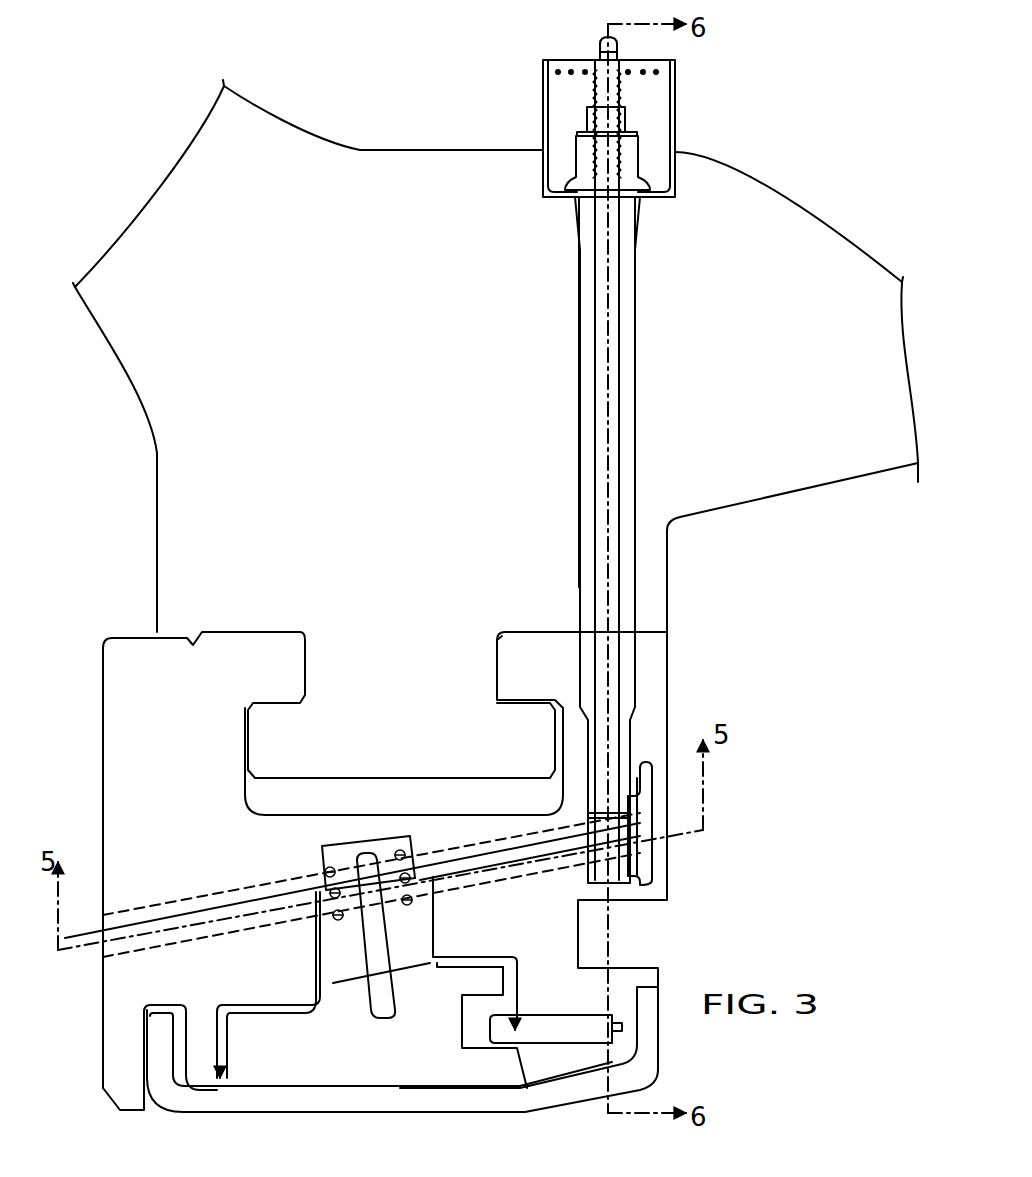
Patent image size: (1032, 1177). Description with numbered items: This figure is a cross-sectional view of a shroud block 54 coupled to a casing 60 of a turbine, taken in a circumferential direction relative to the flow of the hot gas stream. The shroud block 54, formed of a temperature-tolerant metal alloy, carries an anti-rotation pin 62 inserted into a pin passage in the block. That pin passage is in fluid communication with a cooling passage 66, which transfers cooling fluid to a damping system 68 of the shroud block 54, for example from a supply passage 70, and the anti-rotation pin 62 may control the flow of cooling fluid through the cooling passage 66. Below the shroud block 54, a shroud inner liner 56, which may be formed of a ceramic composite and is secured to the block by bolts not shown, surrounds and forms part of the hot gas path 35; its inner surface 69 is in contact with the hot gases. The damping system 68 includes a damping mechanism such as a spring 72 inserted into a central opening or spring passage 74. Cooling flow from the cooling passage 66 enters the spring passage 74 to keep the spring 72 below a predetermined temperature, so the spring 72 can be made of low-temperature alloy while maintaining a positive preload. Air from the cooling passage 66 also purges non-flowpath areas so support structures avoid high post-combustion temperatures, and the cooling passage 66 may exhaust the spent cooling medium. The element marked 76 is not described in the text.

The hot gas path 35 is at (408, 1134).
The shroud block 54 is at (103, 685).
The shroud inner liner 56 is at (480, 1113).
The casing 60 is at (157, 507).
The anti-rotation pin 62 is at (632, 604).
The cooling passage 66 is at (494, 888).
The damping system 68 is at (348, 837).
The inner surface 69 is at (246, 1119).
The supply passage 70 is at (650, 862).
The spring 72 is at (322, 850).
The spring passage 74 is at (427, 838).
The housing 76 is at (330, 960).